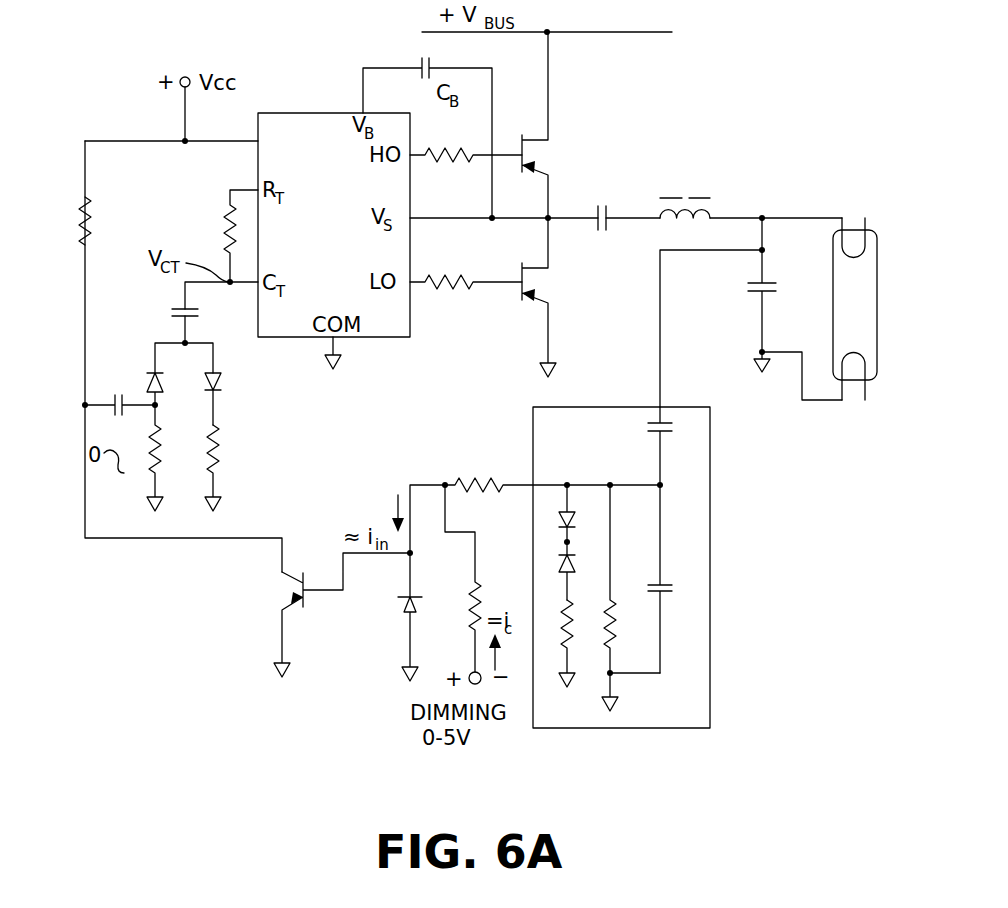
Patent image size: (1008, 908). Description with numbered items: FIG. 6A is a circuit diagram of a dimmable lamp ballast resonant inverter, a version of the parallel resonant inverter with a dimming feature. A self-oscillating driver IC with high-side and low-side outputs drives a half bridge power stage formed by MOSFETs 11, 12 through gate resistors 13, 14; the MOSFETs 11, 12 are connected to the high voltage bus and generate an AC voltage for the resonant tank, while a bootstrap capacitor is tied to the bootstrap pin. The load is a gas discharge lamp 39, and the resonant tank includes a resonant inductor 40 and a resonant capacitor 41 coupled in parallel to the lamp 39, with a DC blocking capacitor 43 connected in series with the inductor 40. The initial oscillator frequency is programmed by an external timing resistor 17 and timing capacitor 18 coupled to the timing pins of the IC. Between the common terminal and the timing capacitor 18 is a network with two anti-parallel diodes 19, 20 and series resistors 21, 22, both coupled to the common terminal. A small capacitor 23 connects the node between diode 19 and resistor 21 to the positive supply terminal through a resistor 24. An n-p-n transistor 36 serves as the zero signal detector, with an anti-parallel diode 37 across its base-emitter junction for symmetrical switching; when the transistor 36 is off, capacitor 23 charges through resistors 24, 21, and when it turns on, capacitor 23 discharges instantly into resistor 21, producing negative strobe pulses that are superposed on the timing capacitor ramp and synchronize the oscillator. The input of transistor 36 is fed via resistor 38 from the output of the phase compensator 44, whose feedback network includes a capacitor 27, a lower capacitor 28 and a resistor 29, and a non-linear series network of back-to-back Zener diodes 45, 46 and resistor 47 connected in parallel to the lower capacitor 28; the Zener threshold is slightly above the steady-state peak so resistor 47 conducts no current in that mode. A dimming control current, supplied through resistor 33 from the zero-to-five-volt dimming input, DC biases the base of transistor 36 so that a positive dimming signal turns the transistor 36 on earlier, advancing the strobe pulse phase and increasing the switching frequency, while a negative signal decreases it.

The MOSFET 11 is at (536, 167).
The MOSFET 12 is at (536, 295).
The gate resistor 13 is at (447, 165).
The gate resistor 14 is at (447, 292).
The timing resistor 17 is at (222, 243).
The timing capacitor 18 is at (170, 314).
The diode 19 is at (149, 386).
The diode 20 is at (221, 384).
The resistor 21 is at (148, 468).
The resistor 22 is at (221, 455).
The capacitor 23 is at (100, 400).
The resistor 24 is at (96, 228).
The capacitor 27 is at (646, 436).
The lower capacitor 28 is at (674, 588).
The resistor 29 is at (618, 618).
The resistor 33 is at (462, 610).
The transistor 36 is at (305, 602).
The anti-parallel diode 37 is at (406, 618).
The resistor 38 is at (476, 495).
The gas discharge lamp 39 is at (852, 215).
The resonant inductor 40 is at (688, 193).
The resonant capacitor 41 is at (752, 298).
The DC blocking capacitor 43 is at (608, 224).
The phase compensator 44 is at (592, 407).
The Zener diode 45 is at (574, 518).
The Zener diode 46 is at (576, 556).
The resistor 47 is at (573, 640).